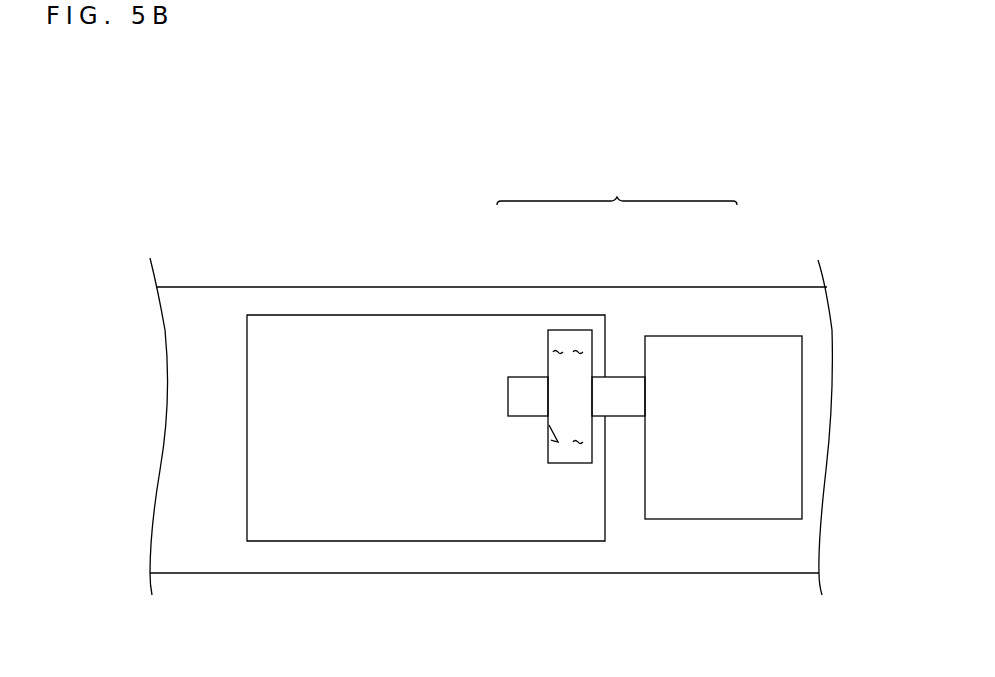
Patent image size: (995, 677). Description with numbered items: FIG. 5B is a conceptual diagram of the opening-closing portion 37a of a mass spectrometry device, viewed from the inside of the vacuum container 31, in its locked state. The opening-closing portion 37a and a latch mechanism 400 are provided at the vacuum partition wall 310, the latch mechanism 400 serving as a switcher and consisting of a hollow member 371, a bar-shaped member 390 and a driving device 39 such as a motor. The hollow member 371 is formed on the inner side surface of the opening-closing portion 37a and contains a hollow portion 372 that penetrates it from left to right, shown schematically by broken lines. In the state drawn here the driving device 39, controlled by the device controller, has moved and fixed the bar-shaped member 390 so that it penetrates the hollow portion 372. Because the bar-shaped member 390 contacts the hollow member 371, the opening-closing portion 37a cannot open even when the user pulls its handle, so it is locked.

The vacuum container 31 is at (802, 212).
The vacuum partition wall 310 is at (182, 287).
The opening-closing portion 37a is at (398, 315).
The hollow member 371 is at (567, 330).
The hollow portion 372 is at (548, 425).
The bar-shaped member 390 is at (517, 377).
The driving device 39 is at (685, 336).
The latch mechanism 400 is at (617, 185).